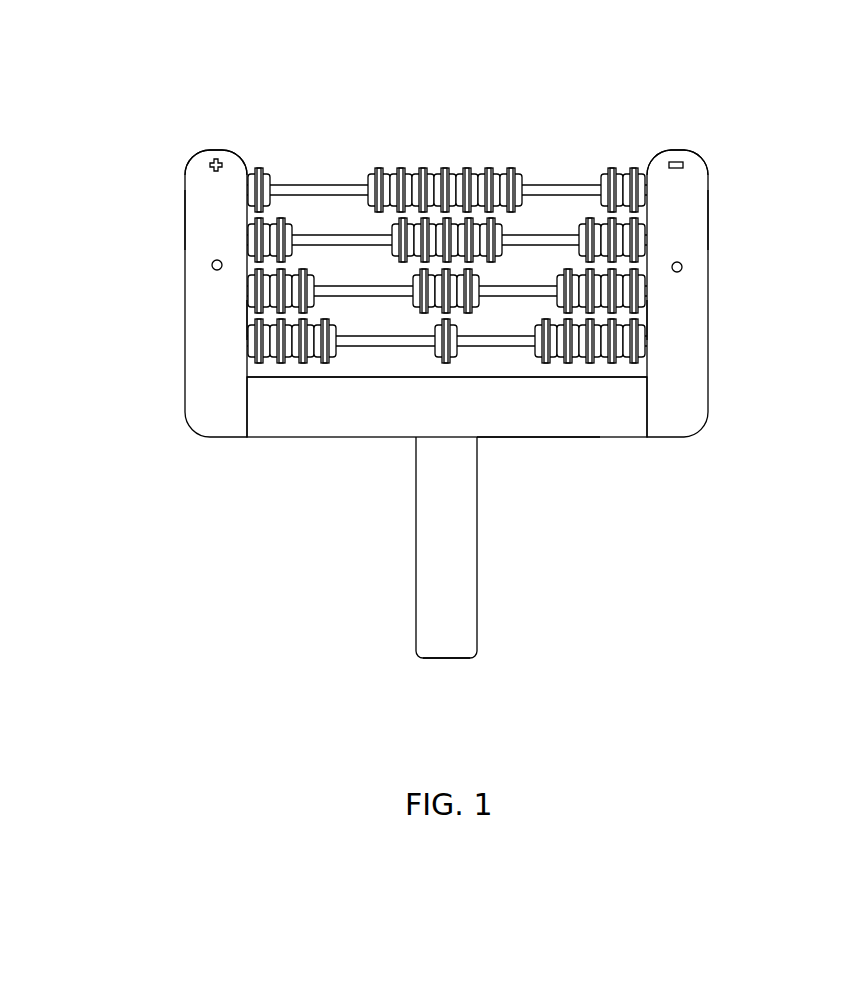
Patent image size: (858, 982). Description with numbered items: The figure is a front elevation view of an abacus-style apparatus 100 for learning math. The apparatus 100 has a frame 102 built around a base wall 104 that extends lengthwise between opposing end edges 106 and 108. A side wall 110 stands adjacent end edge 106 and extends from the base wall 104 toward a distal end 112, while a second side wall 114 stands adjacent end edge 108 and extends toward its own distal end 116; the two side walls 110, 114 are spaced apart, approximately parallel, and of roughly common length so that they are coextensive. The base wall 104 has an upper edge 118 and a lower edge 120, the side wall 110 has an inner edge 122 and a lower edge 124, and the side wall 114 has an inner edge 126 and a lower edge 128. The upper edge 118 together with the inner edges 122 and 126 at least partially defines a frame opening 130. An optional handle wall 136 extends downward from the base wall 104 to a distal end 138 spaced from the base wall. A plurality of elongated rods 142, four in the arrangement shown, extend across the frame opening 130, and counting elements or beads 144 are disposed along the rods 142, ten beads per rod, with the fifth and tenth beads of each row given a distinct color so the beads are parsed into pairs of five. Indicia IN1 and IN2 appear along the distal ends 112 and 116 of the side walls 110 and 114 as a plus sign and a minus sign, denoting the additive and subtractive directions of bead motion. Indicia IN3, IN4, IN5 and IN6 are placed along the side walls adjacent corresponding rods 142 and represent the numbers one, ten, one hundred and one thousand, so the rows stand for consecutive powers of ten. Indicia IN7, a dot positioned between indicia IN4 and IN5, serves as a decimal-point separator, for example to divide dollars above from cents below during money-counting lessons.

The apparatus 100 is at (803, 149).
The frame 102 is at (698, 445).
The base wall 104 is at (311, 430).
The end edge 106 is at (247, 407).
The end edge 108 is at (647, 410).
The side wall 110 is at (191, 325).
The distal end 112 is at (214, 148).
The side wall 114 is at (700, 316).
The distal end 116 is at (678, 148).
The upper edge 118 is at (510, 380).
The lower edge 120 is at (550, 438).
The inner edge 122 is at (247, 370).
The lower edge 124 is at (185, 216).
The inner edge 126 is at (647, 368).
The lower edge 128 is at (708, 216).
The frame opening 130 is at (373, 365).
The handle wall 136 is at (481, 572).
The distal end 138 is at (448, 658).
The elongated rods 142 is at (447, 142).
The counting elements or beads 144 is at (500, 146).
The indicia IN1 is at (229, 157).
The indicia IN2 is at (694, 158).
The indicia IN3 is at (212, 342).
The indicia IN4 is at (205, 290).
The indicia IN5 is at (203, 239).
The indicia IN6 is at (192, 190).
The indicia IN7 is at (205, 265).